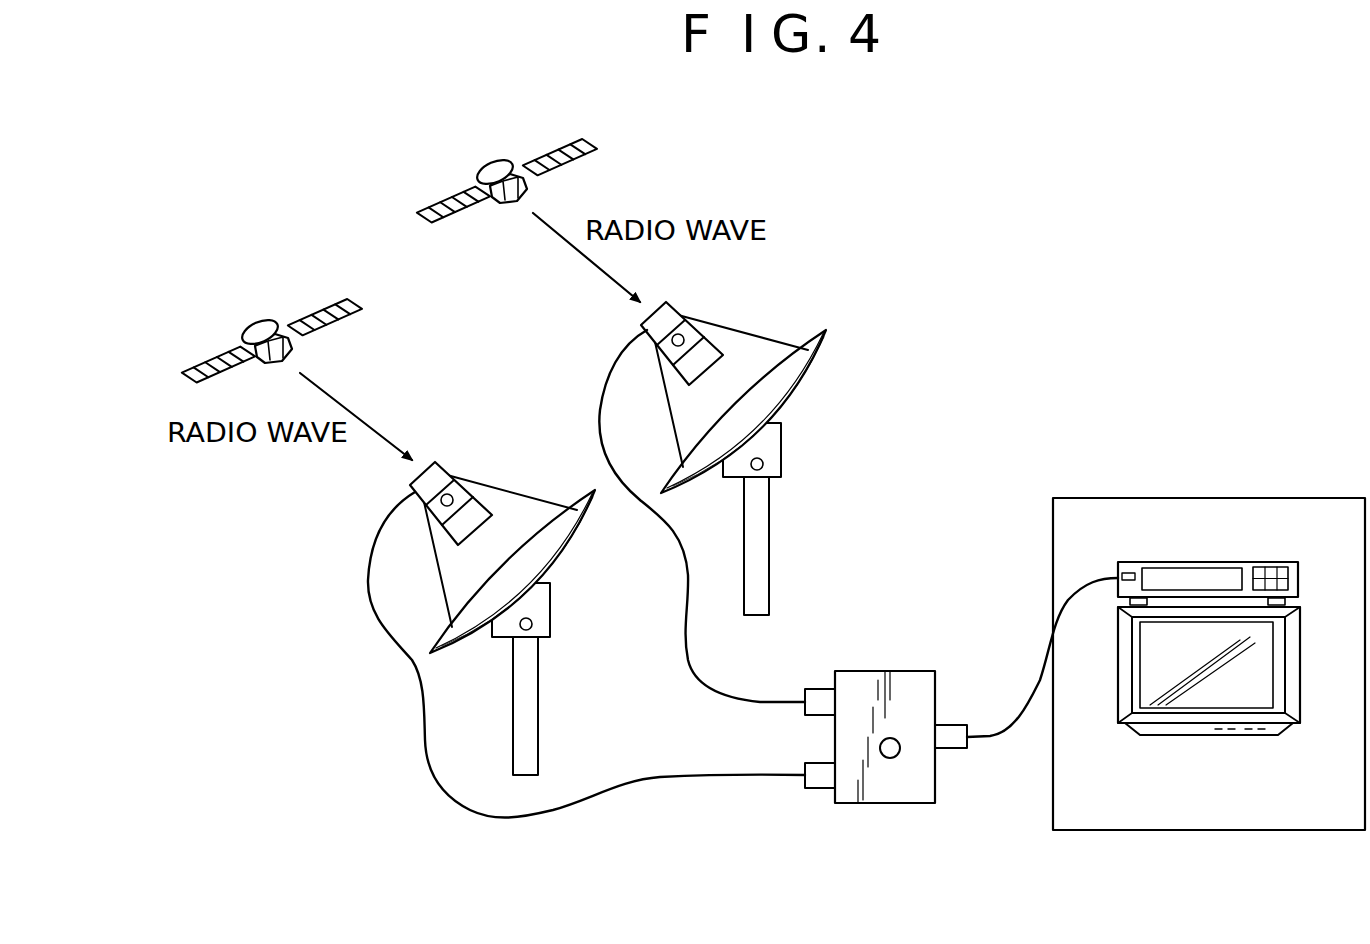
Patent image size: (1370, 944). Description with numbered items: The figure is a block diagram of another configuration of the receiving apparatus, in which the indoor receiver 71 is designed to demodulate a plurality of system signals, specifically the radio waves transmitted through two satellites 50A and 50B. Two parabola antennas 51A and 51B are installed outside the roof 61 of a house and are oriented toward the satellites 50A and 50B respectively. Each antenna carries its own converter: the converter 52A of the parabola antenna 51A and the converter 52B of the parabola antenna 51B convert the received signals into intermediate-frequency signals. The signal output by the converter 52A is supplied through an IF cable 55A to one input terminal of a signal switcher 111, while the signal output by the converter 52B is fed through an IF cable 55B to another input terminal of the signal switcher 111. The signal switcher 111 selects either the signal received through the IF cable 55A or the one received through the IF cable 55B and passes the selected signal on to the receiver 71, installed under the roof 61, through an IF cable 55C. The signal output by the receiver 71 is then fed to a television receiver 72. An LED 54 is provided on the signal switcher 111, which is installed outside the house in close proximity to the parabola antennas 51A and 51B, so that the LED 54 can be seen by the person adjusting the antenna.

The satellite 50A is at (485, 165).
The satellite 50B is at (253, 326).
The parabola antenna 51A is at (832, 340).
The parabola antenna 51B is at (590, 508).
The converter 52A is at (640, 318).
The converter 52B is at (408, 473).
The LED 54 is at (899, 751).
The IF cable 55A is at (695, 668).
The IF cable 55B is at (422, 715).
The IF cable 55C is at (1042, 658).
The roof 61 is at (1198, 498).
The receiver 71 is at (1193, 562).
The television receiver 72 is at (1118, 683).
The signal switcher 111 is at (870, 671).